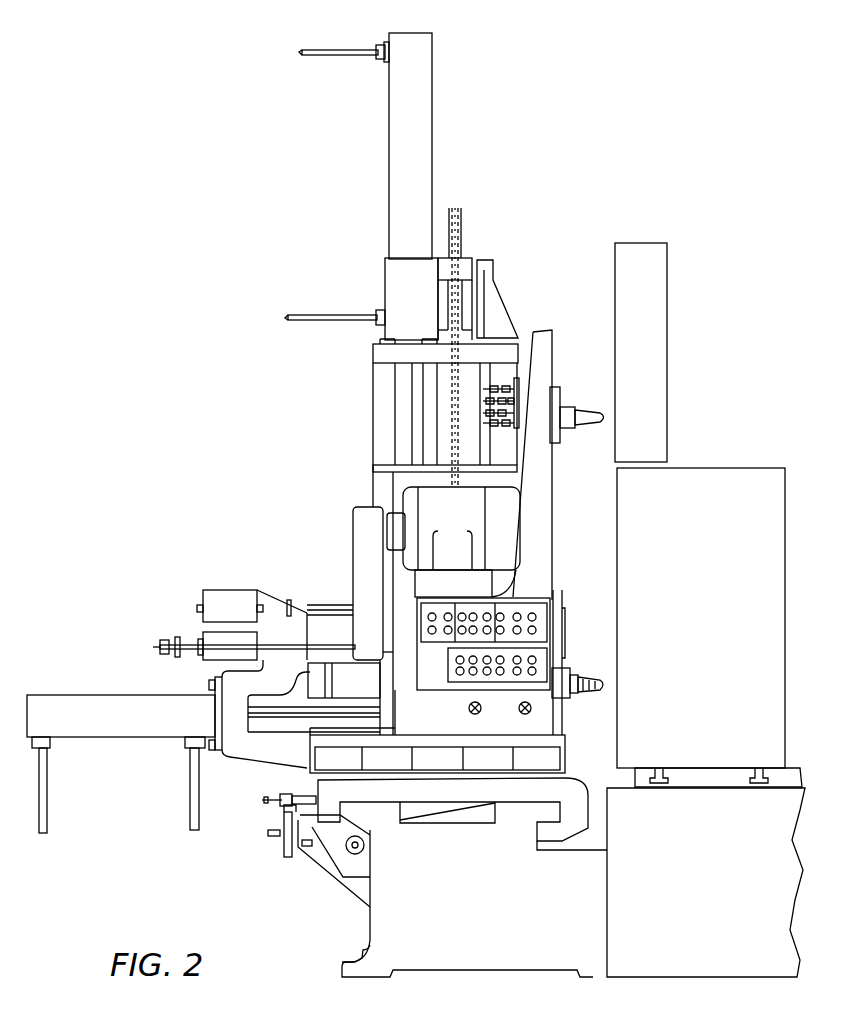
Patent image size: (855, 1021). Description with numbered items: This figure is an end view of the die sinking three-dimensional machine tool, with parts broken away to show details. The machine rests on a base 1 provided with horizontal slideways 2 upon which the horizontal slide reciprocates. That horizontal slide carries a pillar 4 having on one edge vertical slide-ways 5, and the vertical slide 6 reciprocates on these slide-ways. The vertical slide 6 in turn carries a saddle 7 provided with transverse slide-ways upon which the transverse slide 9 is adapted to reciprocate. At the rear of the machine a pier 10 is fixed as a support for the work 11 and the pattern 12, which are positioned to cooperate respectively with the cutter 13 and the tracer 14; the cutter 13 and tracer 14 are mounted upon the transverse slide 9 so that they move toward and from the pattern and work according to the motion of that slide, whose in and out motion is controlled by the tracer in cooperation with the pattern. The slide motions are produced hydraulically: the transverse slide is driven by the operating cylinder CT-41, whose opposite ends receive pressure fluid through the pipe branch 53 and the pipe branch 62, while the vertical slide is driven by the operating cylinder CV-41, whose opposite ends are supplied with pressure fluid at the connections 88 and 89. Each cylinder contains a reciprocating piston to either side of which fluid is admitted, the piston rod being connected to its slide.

The base 1 is at (467, 903).
The horizontal slideways 2 is at (365, 815).
The pillar 4 is at (378, 394).
The vertical slide-ways 5 is at (398, 427).
The vertical slide 6 is at (405, 480).
The saddle 7 is at (548, 758).
The transverse slide 9 is at (383, 685).
The pier 10 is at (706, 882).
The work 11 is at (701, 618).
The pattern 12 is at (660, 327).
The cutter 13 is at (598, 683).
The tracer 14 is at (590, 412).
The pipe branch 53 is at (45, 818).
The pipe branch 62 is at (192, 812).
The vertical cylinder connection 88 is at (292, 322).
The vertical cylinder connection 89 is at (305, 56).
The vertical slide operating cylinder CV-41 is at (425, 122).
The transverse slide operating cylinder CT-41 is at (95, 706).